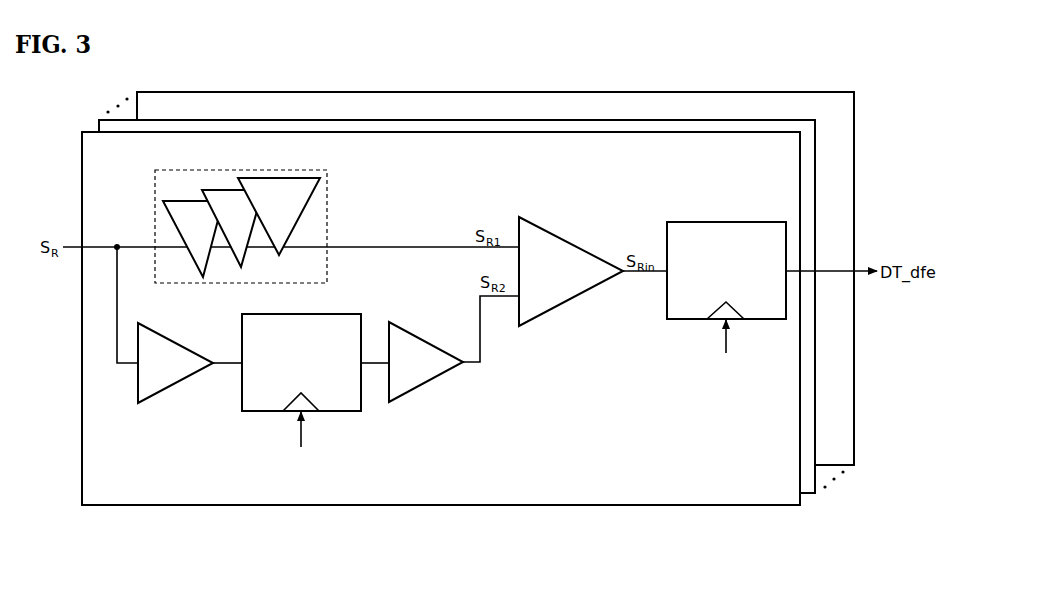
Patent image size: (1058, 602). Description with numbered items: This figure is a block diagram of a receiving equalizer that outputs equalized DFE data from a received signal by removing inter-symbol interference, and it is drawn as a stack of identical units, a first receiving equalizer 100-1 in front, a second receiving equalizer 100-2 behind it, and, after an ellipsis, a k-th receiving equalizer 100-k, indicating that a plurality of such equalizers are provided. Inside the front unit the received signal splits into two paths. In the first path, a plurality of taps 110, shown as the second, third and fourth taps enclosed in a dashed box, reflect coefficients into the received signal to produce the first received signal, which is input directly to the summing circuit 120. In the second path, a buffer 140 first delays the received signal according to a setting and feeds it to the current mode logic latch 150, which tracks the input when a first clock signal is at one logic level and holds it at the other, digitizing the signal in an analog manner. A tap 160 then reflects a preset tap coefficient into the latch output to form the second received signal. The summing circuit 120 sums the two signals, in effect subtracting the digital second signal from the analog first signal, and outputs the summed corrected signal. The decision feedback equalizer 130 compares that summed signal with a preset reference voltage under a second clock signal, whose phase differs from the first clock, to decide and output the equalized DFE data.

The receiving equalizer 100-1 is at (727, 506).
The receiving equalizer 100-2 is at (805, 494).
The receiving equalizer 100-k is at (855, 466).
The plurality of taps 110 is at (155, 190).
The summing circuit 120 is at (546, 228).
The decision feedback equalizer 130 is at (726, 222).
The buffer 140 is at (160, 391).
The current mode logic (CML) latch 150 is at (342, 412).
The tap 160 is at (412, 390).